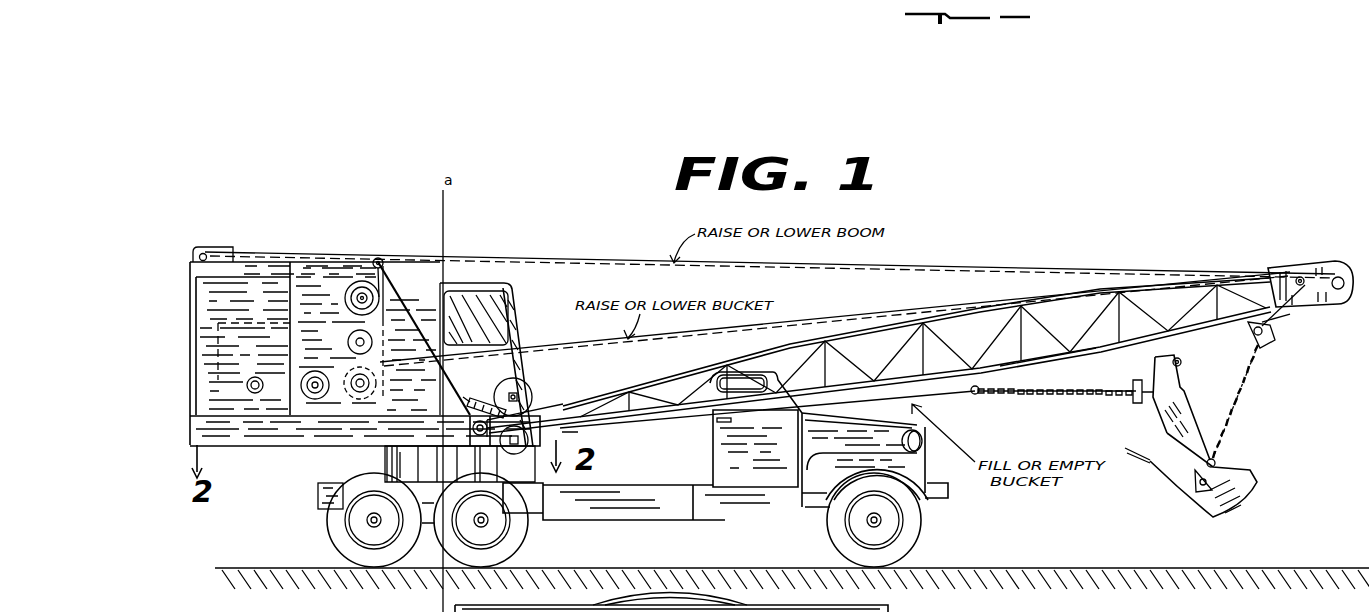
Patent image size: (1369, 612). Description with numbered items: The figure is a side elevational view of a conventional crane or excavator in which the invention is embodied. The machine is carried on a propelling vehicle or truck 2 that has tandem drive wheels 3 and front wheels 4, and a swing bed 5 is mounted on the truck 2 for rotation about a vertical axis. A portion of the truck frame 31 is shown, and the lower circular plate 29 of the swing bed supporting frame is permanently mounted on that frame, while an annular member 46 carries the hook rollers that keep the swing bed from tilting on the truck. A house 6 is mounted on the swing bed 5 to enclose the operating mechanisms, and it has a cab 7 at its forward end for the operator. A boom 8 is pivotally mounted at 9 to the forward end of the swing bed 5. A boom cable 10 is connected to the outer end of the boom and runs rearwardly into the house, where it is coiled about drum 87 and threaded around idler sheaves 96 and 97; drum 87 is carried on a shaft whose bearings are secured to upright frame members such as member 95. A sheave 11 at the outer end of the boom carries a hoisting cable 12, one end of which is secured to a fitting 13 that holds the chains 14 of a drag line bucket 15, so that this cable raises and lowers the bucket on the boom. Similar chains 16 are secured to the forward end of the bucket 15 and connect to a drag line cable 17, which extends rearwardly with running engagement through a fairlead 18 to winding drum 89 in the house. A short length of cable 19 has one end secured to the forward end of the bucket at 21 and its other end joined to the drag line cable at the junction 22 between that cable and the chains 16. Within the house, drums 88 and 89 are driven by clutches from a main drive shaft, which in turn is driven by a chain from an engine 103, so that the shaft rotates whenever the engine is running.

The truck 2 is at (605, 510).
The tandem drive wheels 3 is at (459, 548).
The front wheels 4 is at (905, 540).
The swing bed 5 is at (275, 454).
The house 6 is at (316, 268).
The cab 7 is at (487, 286).
The boom 8 is at (993, 300).
The boom pivot 9 is at (473, 430).
The boom cable 10 is at (968, 268).
The sheave 11 is at (1340, 262).
The hoisting cable 12 is at (867, 308).
The fitting 13 is at (1267, 333).
The chains 14 is at (1243, 400).
The drag line bucket 15 is at (1232, 462).
The chains 16 is at (1060, 396).
The drag line cable 17 is at (490, 396).
The fairlead 18 is at (502, 412).
The short length of cable 19 is at (1098, 358).
The cable attachment point 21 is at (1182, 364).
The junction 22 is at (978, 394).
The lower circular plate 29 is at (470, 470).
The truck frame 31 is at (318, 494).
The annular member 46 is at (400, 463).
The drum 87 is at (355, 282).
The drum 88 is at (344, 370).
The drum 89 is at (338, 340).
The upright frame member 95 is at (384, 300).
The idler sheave 96 is at (383, 260).
The idler sheave 97 is at (218, 247).
The engine 103 is at (243, 323).